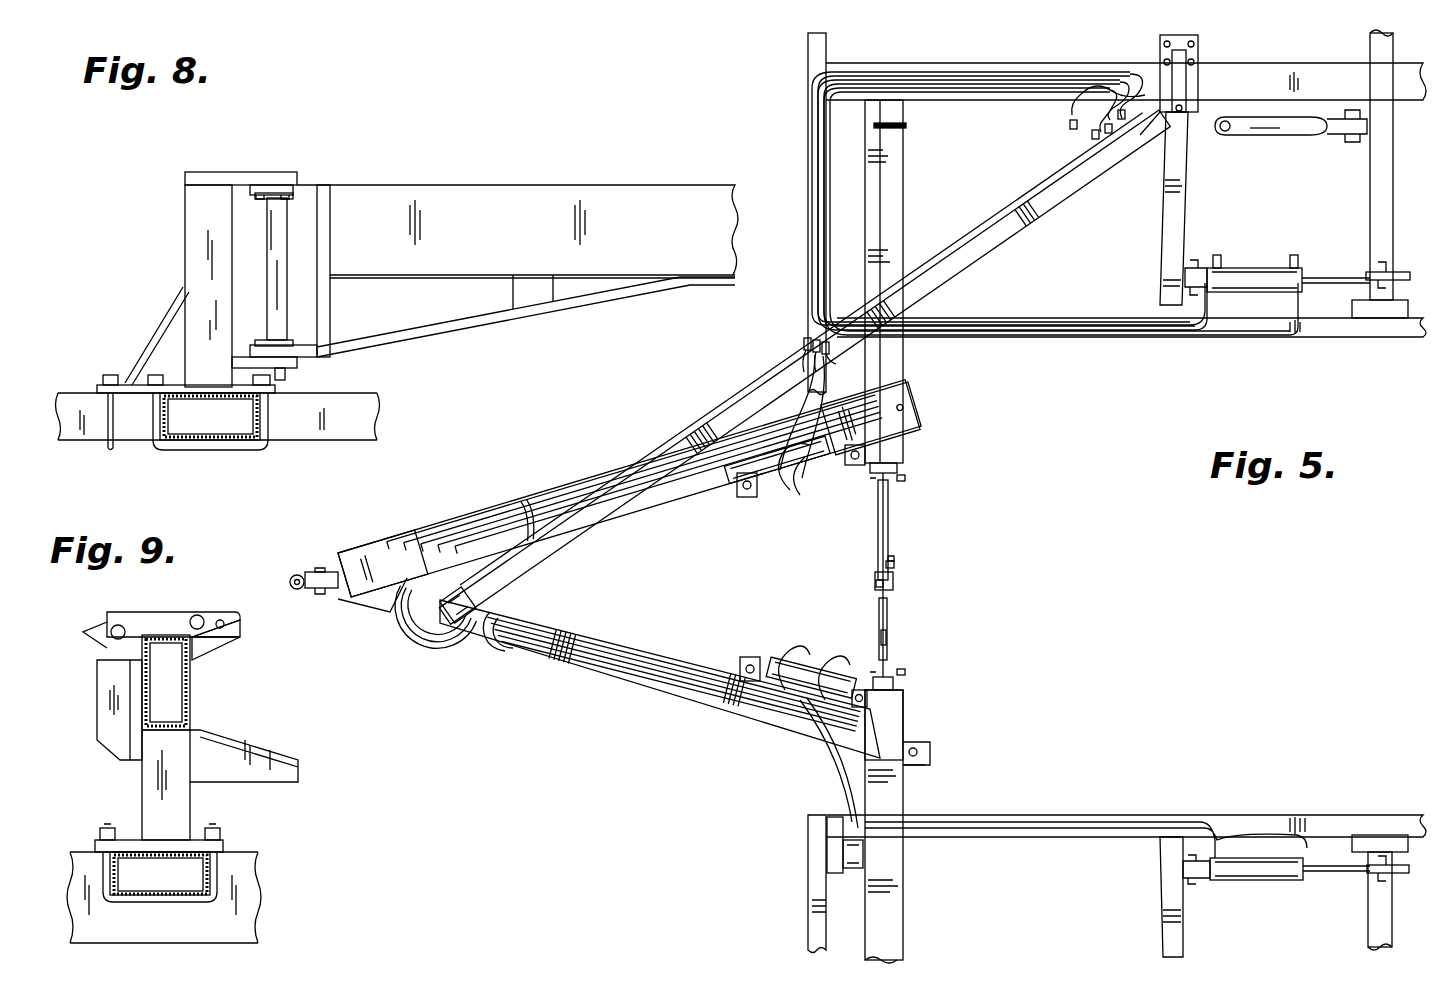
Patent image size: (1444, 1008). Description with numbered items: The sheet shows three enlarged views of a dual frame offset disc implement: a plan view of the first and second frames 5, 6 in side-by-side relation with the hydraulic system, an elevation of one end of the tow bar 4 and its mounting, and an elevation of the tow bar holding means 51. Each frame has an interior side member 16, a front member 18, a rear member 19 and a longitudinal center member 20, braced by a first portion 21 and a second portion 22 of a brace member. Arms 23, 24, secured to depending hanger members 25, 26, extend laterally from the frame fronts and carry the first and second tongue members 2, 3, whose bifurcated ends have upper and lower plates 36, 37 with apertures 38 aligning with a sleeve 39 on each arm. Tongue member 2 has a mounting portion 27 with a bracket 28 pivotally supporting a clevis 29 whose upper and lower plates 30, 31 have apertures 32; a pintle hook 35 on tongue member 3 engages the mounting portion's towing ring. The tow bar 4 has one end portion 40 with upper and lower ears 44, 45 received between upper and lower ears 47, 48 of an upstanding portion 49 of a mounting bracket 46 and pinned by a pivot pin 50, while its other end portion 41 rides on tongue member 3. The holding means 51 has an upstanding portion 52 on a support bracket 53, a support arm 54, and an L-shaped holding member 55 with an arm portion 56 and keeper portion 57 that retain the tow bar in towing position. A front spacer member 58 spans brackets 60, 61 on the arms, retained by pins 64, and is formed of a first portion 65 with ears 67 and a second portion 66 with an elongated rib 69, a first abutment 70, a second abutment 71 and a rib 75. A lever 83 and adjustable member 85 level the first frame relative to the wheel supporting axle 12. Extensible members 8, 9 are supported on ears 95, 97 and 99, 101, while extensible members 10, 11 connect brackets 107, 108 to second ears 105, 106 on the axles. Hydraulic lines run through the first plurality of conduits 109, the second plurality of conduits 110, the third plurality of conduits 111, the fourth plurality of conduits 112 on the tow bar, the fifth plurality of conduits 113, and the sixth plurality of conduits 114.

In FIG. 5, the first tongue member 2 is at (590, 490).
In FIG. 5, the second tongue member 3 is at (619, 687).
In FIG. 8, the tow bar 4 is at (592, 182).
In FIG. 9, the tow bar 4 is at (190, 705).
In FIG. 5, the tow bar 4 is at (1018, 240).
In FIG. 5, the first frame 5 is at (1250, 345).
In FIG. 5, the second frame 6 is at (1256, 812).
In FIG. 5, the extensible member 8 is at (785, 482).
In FIG. 5, the extensible member 9 is at (795, 676).
In FIG. 5, the extensible member 10 is at (1253, 264).
In FIG. 5, the extensible member 11 is at (1258, 878).
In FIG. 5, the wheel supporting axle 12 is at (1385, 185).
In FIG. 5, the interior side member 16 is at (1361, 325).
In FIG. 5, the front member 18 is at (808, 54).
In FIG. 9, the rear member 19 is at (245, 904).
In FIG. 8, the center member 20 is at (217, 433).
In FIG. 9, the center member 20 is at (138, 888).
In FIG. 5, the center member 20 is at (1288, 70).
In FIG. 8, the first portion of brace member 21 is at (300, 430).
In FIG. 5, the first portion of brace member 21 is at (1165, 241).
In FIG. 8, the second portion of brace member 22 is at (81, 433).
In FIG. 5, the arm 23 is at (894, 188).
In FIG. 5, the arm 24 is at (905, 922).
In FIG. 5, the hanger member 25 is at (870, 221).
In FIG. 5, the hanger member 26 is at (828, 868).
In FIG. 5, the mounting portion 27 is at (376, 555).
In FIG. 5, the bracket 28 is at (313, 570).
In FIG. 5, the clevis 29 is at (298, 570).
In FIG. 5, the upper plate 30 is at (335, 598).
In FIG. 5, the lower plate 31 is at (290, 582).
In FIG. 5, the aperture 32 is at (310, 588).
In FIG. 5, the pintle hook 35 is at (420, 640).
In FIG. 5, the upper plate 36 is at (902, 734).
In FIG. 5, the lower plate 37 is at (929, 753).
In FIG. 5, the aperture 38 is at (923, 400).
In FIG. 5, the sleeve 39 is at (918, 764).
In FIG. 8, the one end portion of tow bar 40 is at (376, 182).
In FIG. 5, the one end portion of tow bar 40 is at (1180, 138).
In FIG. 5, the other end portion of tow bar 41 is at (464, 645).
In FIG. 8, the upper ear 44 is at (286, 182).
In FIG. 8, the lower ear 45 is at (310, 357).
In FIG. 8, the mounting bracket 46 is at (183, 242).
In FIG. 5, the mounting bracket 46 is at (1200, 30).
In FIG. 8, the upper ear 47 is at (241, 178).
In FIG. 8, the lower ear 48 is at (280, 374).
In FIG. 8, the upstanding portion 49 is at (195, 264).
In FIG. 8, the pivot pin 50 is at (273, 253).
In FIG. 9, the tow bar holding means 51 is at (134, 794).
In FIG. 9, the upstanding portion 52 is at (97, 742).
In FIG. 9, the support bracket 53 is at (222, 837).
In FIG. 9, the support arm 54 is at (265, 753).
In FIG. 9, the holding member 55 is at (235, 623).
In FIG. 9, the arm portion 56 is at (160, 615).
In FIG. 9, the keeper portion 57 is at (205, 650).
In FIG. 5, the front spacer member 58 is at (873, 550).
In FIG. 5, the mounting bracket 60 is at (902, 468).
In FIG. 5, the mounting bracket 61 is at (904, 682).
In FIG. 5, the pin 64 is at (906, 478).
In FIG. 5, the first portion 65 is at (878, 520).
In FIG. 5, the second portion 66 is at (890, 614).
In FIG. 5, the ears 67 is at (892, 570).
In FIG. 5, the elongated rib 69 is at (896, 565).
In FIG. 5, the first abutment 70 is at (878, 584).
In FIG. 5, the second abutment 71 is at (894, 557).
In FIG. 5, the rib 75 is at (888, 640).
In FIG. 5, the lever 83 is at (895, 125).
In FIG. 5, the adjustable member 85 is at (1267, 130).
In FIG. 5, the ears 95 is at (745, 488).
In FIG. 5, the ears 97 is at (858, 467).
In FIG. 5, the ears 99 is at (743, 665).
In FIG. 5, the ears 101 is at (860, 685).
In FIG. 5, the second ear 105 is at (1397, 270).
In FIG. 5, the second ear 106 is at (1400, 873).
In FIG. 5, the bracket 107 is at (1191, 267).
In FIG. 5, the bracket 108 is at (1185, 880).
In FIG. 5, the first plurality of conduits 109 is at (525, 505).
In FIG. 5, the second plurality of conduits 110 is at (1095, 330).
In FIG. 5, the third plurality of conduits 111 is at (883, 85).
In FIG. 5, the fourth plurality of conduits 112 is at (1025, 208).
In FIG. 5, the fifth plurality of conduits 113 is at (550, 665).
In FIG. 5, the sixth plurality of conduits 114 is at (1060, 820).